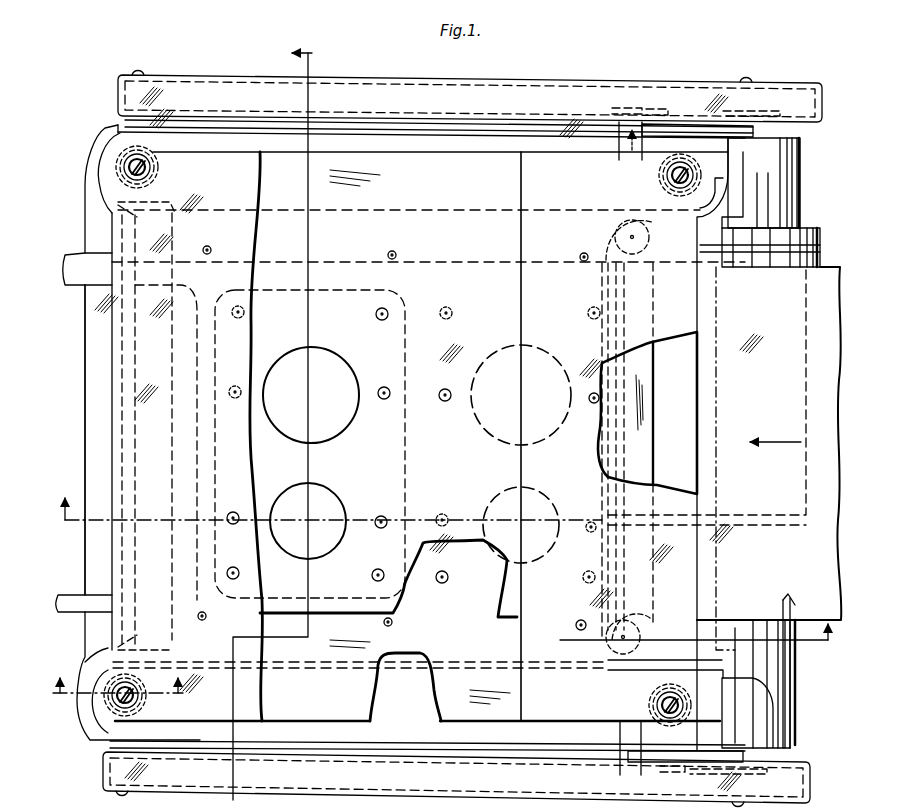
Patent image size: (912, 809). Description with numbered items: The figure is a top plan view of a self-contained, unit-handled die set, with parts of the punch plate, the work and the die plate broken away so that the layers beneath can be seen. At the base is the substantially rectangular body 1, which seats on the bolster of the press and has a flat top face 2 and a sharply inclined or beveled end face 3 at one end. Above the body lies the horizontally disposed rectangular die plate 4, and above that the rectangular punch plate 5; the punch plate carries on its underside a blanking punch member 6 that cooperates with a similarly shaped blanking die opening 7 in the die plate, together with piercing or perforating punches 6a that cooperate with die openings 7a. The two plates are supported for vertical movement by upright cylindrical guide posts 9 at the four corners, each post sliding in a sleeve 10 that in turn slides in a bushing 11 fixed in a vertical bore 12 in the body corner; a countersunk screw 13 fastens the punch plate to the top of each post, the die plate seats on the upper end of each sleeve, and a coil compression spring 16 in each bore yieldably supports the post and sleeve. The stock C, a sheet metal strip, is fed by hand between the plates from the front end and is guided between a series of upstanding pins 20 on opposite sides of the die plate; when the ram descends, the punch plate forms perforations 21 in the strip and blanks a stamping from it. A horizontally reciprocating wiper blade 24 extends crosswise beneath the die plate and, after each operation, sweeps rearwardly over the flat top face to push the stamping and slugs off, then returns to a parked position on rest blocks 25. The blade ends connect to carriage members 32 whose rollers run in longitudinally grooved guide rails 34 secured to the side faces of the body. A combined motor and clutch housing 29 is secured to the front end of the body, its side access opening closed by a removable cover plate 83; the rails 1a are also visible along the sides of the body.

The body 1 is at (397, 133).
The guide rail 1a is at (200, 93).
The flat top face 2 is at (401, 657).
The beveled end face 3 is at (167, 447).
The die plate 4 is at (444, 173).
The punch plate 5 is at (152, 228).
The blanking punch member 6 is at (217, 355).
The piercing punches 6a is at (539, 353).
The blanking die opening 7 is at (404, 460).
The die openings 7a is at (476, 335).
The guide posts 9 is at (118, 699).
The sleeve 10 is at (157, 169).
The bushing 11 is at (640, 685).
The vertical bore 12 is at (145, 147).
The countersunk screw 13 is at (127, 168).
The coil compression spring 16 is at (733, 147).
The upstanding pins 20 is at (210, 247).
The perforations 21 is at (384, 387).
The wiper blade 24 is at (627, 143).
The rest blocks 25 is at (634, 270).
The combined motor and clutch housing 29 is at (800, 220).
The carriage members 32 is at (695, 108).
The guide rails 34 is at (277, 120).
The removable cover plate 83 is at (798, 693).
The stock C is at (73, 283).